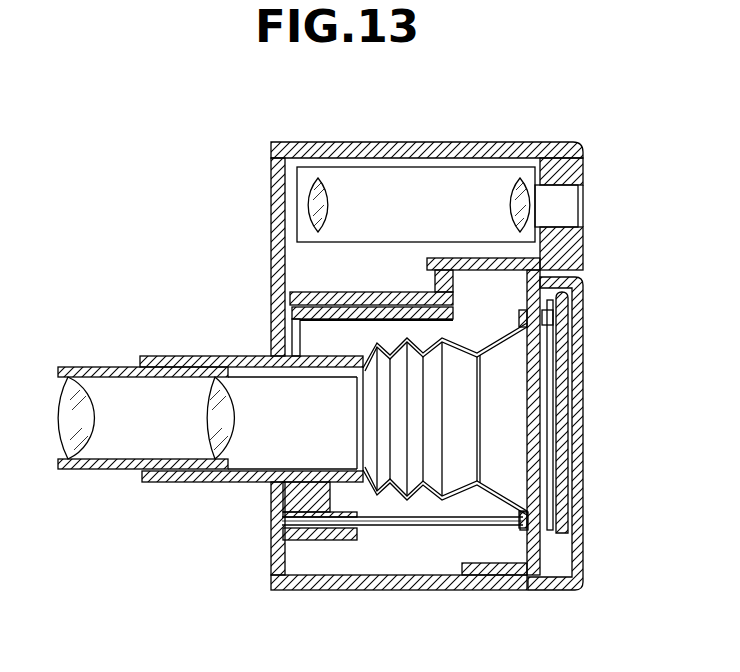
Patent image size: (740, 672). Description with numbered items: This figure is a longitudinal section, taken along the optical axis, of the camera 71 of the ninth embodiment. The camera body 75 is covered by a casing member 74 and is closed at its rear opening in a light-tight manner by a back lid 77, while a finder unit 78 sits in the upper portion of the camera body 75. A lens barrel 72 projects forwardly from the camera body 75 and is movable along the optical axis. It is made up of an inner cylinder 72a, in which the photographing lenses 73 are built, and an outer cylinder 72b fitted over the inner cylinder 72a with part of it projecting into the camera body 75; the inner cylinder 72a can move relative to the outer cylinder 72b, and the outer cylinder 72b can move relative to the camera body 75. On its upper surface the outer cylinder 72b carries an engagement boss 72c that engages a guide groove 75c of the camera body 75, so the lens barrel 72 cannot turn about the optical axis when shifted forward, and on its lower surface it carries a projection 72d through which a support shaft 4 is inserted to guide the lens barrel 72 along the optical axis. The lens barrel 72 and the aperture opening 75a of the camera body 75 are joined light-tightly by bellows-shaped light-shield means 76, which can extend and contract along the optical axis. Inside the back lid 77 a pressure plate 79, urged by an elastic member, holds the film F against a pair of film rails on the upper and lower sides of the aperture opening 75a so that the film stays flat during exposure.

The camera 71 is at (370, 368).
The casing member 74 is at (345, 155).
The finder unit 78 is at (385, 190).
The camera body 75 is at (438, 328).
The aperture opening 75a is at (540, 350).
The guide groove 75c is at (330, 300).
The lens barrel 72 is at (245, 395).
The inner cylinder 72a is at (85, 365).
The outer cylinder 72b is at (175, 354).
The engagement boss 72c is at (300, 330).
The projection 72d is at (305, 495).
The photographing lenses 73 is at (215, 425).
The bellows-shaped light-shield means 76 is at (507, 397).
The support shaft 4 is at (417, 520).
The film F is at (554, 445).
The pressure plate 79 is at (566, 488).
The back lid 77 is at (550, 590).